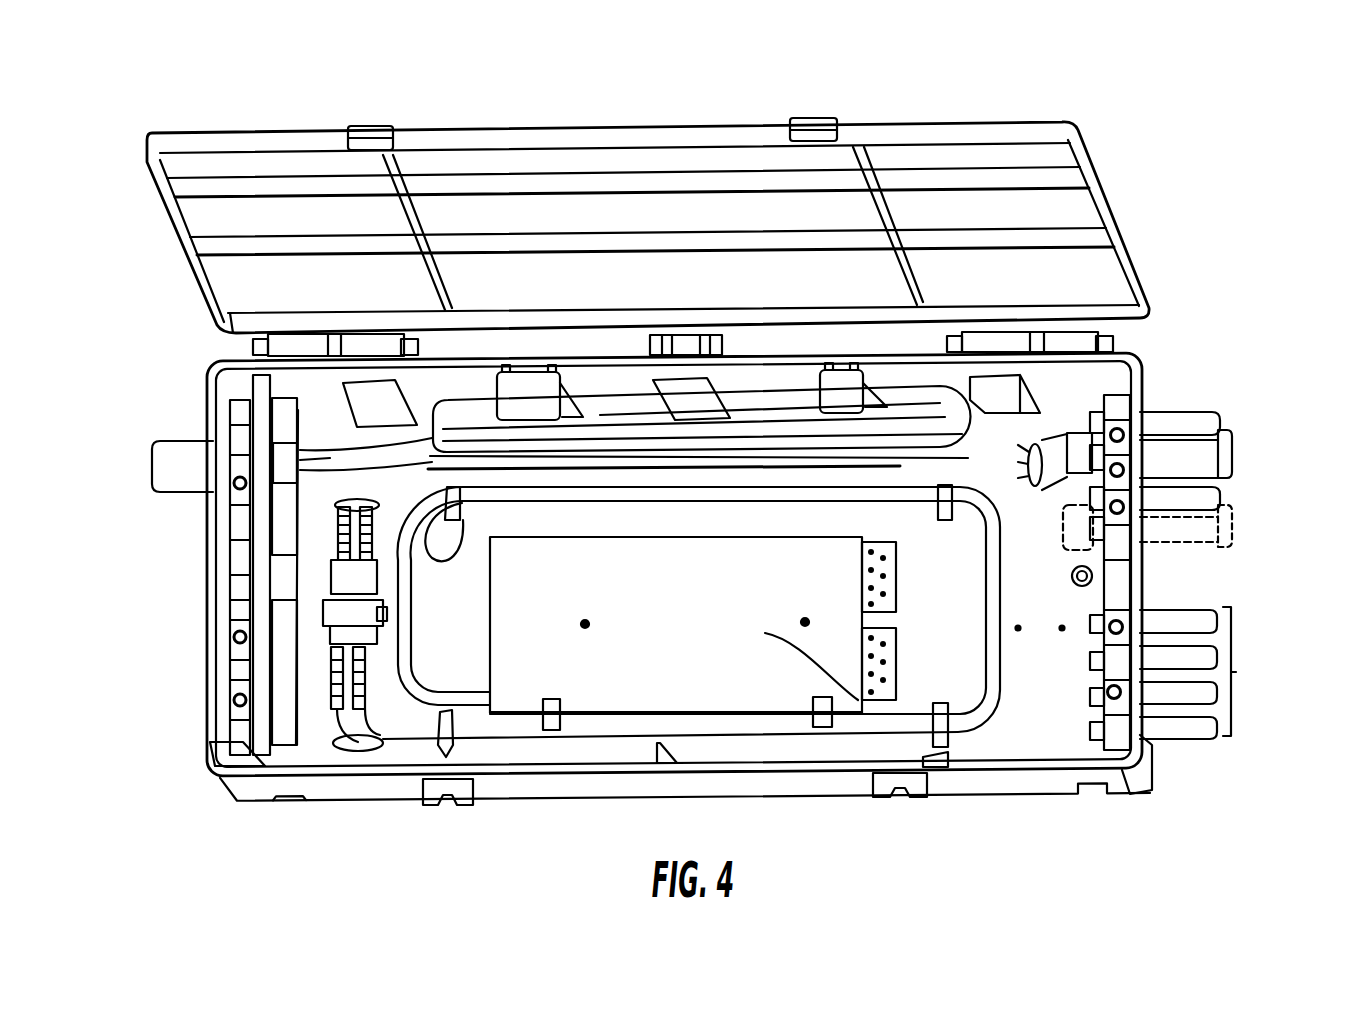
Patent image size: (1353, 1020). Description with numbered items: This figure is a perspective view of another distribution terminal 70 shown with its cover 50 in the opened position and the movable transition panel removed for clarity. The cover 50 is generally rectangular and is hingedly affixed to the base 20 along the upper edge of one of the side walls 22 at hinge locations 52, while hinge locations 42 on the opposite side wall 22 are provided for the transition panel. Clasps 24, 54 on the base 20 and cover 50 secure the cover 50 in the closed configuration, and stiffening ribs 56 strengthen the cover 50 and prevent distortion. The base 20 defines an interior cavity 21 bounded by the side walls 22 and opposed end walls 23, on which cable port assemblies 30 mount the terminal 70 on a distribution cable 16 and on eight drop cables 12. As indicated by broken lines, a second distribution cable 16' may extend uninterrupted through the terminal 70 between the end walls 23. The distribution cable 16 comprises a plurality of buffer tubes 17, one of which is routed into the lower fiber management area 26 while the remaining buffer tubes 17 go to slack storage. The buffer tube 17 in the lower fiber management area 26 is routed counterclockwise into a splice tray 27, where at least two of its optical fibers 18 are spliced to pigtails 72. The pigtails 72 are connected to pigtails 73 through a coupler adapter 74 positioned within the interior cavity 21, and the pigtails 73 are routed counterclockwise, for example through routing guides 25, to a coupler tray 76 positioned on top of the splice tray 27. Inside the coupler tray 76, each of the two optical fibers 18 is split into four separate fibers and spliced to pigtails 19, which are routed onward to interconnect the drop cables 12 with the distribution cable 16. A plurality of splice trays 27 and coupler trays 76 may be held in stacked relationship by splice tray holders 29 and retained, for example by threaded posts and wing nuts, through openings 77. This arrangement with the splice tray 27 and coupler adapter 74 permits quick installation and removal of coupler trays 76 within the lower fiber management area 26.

The drop cables 12 is at (1193, 457).
The distribution cable 16 is at (698, 447).
The second distribution cable 16' is at (1185, 514).
The buffer tubes 17 is at (762, 383).
The optical fibers 18 is at (990, 718).
The pigtails 19 is at (765, 633).
The base 20 is at (1118, 790).
The interior cavity 21 is at (1040, 740).
The side walls 22 is at (775, 786).
The end walls 23 is at (1142, 765).
The clasps 24 is at (442, 801).
The routing guides 25 is at (1040, 432).
The lower fiber management area 26 is at (949, 641).
The splice tray 27 is at (718, 717).
The splice tray holders 29 is at (823, 725).
The cable port assemblies 30 is at (218, 412).
The hinge locations 42 is at (655, 757).
The cover 50 is at (550, 135).
The hinge locations 52 is at (300, 343).
The clasps 54 is at (370, 138).
The stiffening ribs 56 is at (216, 200).
The distribution terminal 70 is at (1256, 238).
The pigtails 72 is at (340, 560).
The pigtails 73 is at (328, 650).
The coupler adapter 74 is at (262, 740).
The coupler tray 76 is at (697, 653).
The openings 77 is at (582, 625).